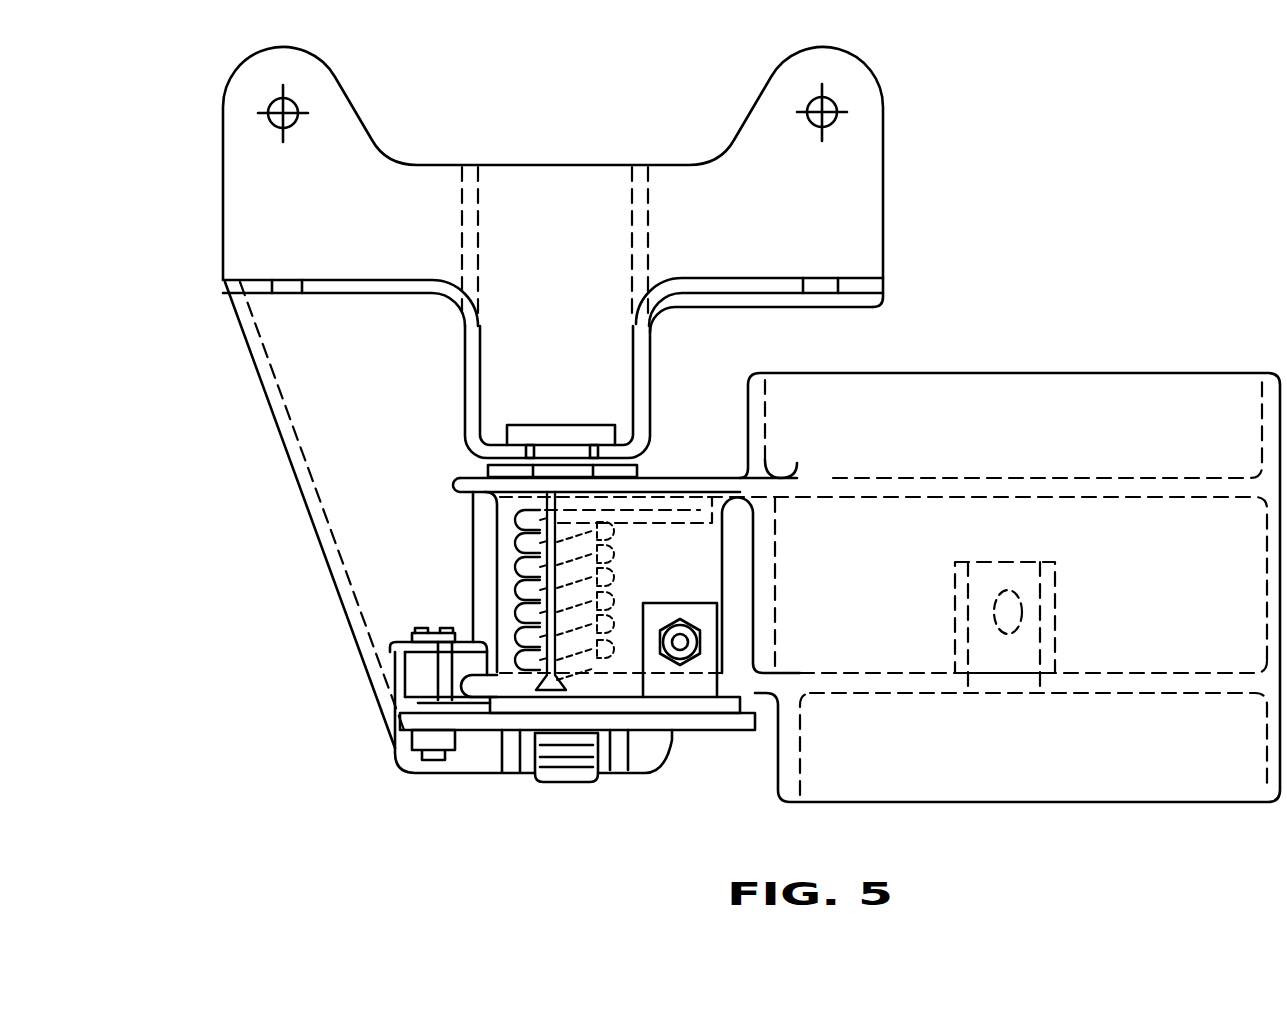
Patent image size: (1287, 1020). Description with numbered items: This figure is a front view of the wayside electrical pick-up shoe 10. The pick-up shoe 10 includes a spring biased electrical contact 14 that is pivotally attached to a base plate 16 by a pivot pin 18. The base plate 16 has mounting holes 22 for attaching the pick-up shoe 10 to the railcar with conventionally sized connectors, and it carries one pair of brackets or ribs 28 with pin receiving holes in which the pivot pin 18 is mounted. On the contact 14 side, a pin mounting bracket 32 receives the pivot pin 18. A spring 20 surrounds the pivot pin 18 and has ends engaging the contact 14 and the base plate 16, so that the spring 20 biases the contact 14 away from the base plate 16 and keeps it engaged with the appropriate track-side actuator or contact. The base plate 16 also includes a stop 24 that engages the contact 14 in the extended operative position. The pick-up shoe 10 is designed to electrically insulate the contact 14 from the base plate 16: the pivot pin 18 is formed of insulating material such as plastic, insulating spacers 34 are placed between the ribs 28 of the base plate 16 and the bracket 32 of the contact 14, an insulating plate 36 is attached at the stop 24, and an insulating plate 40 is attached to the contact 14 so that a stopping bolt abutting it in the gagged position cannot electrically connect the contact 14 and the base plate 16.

The pick-up shoe 10 is at (1170, 303).
The electrical contact 14 is at (995, 372).
The base plate 16 is at (885, 183).
The pivot pin 18 is at (517, 424).
The spring 20 is at (672, 512).
The mounting holes 22 is at (305, 112).
The stop 24 is at (410, 695).
The brackets or ribs 28 is at (645, 397).
The pin mounting bracket 32 is at (458, 487).
The insulating spacers 34 is at (488, 470).
The insulating plate 36 is at (443, 625).
The insulating plate 40 is at (690, 604).